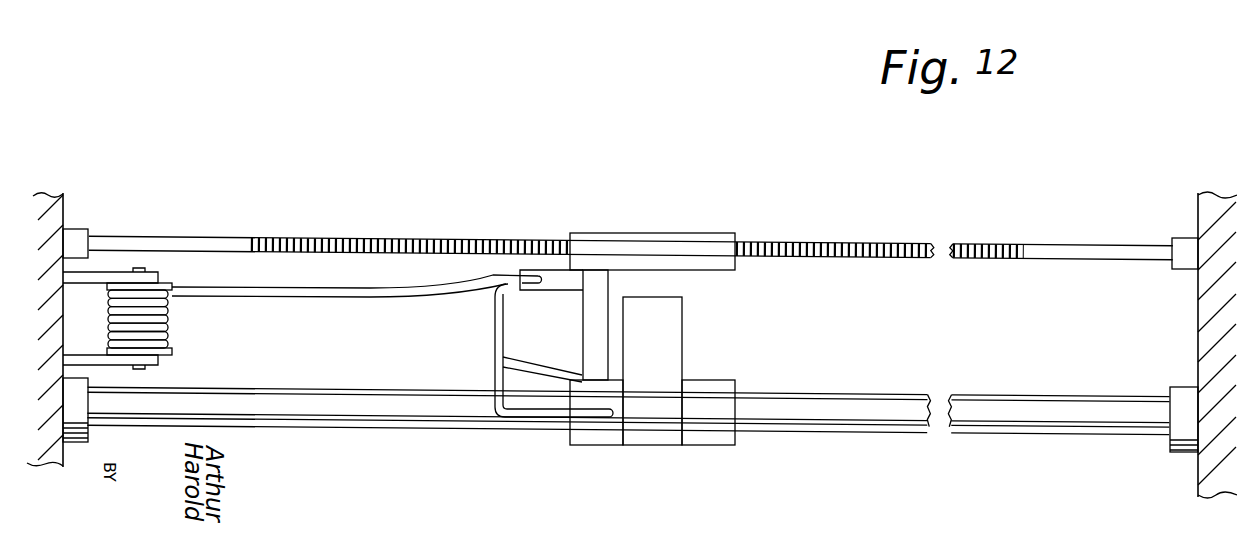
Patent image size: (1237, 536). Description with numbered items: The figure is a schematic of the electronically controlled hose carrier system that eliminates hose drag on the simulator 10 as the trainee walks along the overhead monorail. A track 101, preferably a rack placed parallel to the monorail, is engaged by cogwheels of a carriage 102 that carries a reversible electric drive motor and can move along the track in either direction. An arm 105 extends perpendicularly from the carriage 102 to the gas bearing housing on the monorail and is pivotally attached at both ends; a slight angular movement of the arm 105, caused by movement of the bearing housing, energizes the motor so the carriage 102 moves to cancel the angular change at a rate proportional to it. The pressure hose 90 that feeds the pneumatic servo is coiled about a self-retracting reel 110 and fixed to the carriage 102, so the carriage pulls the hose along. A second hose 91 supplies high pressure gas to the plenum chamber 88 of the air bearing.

The simulator 10 is at (644, 460).
The plenum chamber 88 is at (713, 433).
The pressure hose 90 is at (300, 298).
The pressure hose 91 is at (494, 378).
The track 101 is at (408, 238).
The carriage 102 is at (650, 233).
The arm 105 is at (583, 310).
The self-retracting reel 110 is at (172, 354).